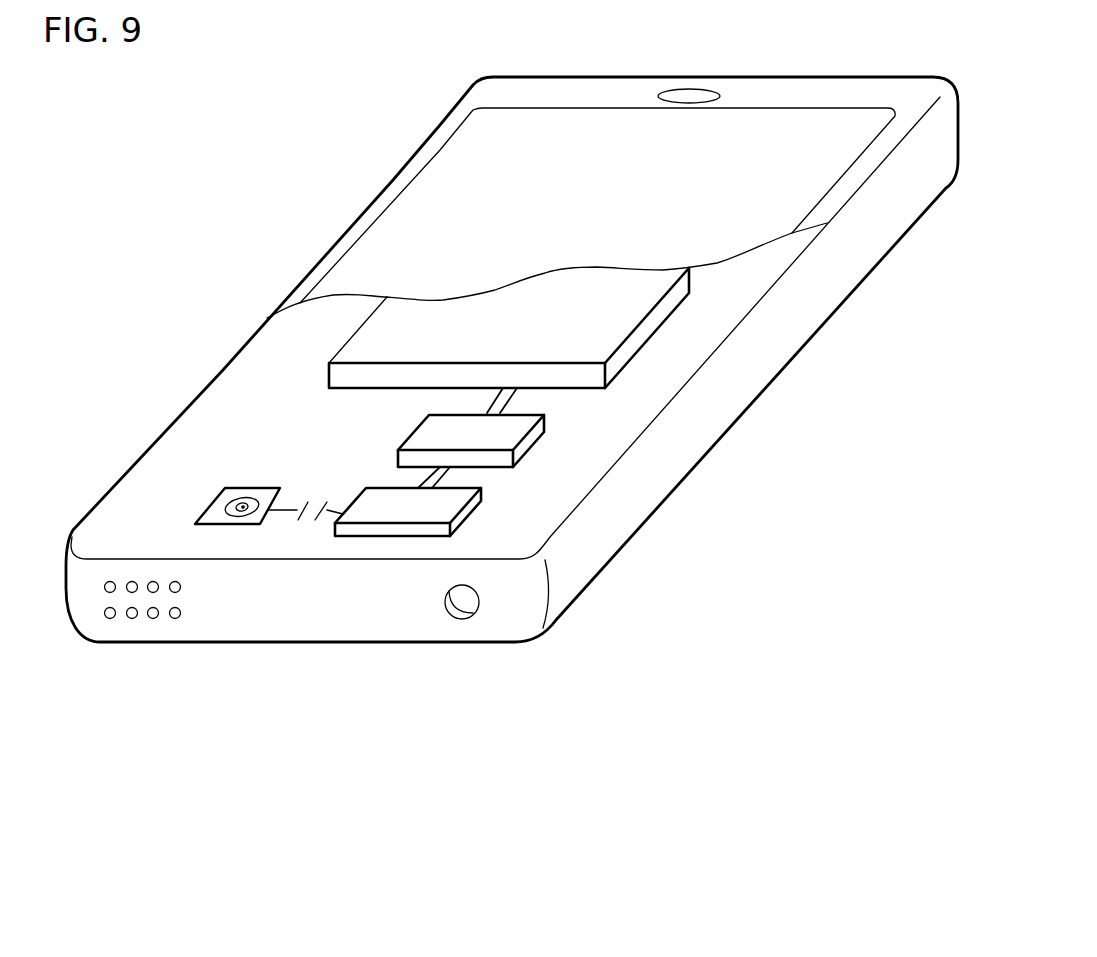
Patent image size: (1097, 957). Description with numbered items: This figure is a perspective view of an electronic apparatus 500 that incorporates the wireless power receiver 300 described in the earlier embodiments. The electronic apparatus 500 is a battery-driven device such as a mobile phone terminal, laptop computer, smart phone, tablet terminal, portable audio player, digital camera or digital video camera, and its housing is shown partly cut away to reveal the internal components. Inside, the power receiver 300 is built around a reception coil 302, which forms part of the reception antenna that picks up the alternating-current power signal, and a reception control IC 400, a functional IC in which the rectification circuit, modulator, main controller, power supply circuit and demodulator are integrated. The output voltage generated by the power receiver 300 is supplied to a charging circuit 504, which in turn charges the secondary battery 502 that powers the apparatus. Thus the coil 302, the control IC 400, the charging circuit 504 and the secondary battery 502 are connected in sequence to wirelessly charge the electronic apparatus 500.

The electronic apparatus 500 is at (403, 789).
The power receiver 300 is at (720, 488).
The secondary battery 502 is at (343, 343).
The charging circuit 504 is at (430, 438).
The reception control IC 400 is at (443, 507).
The reception coil 302 is at (205, 507).